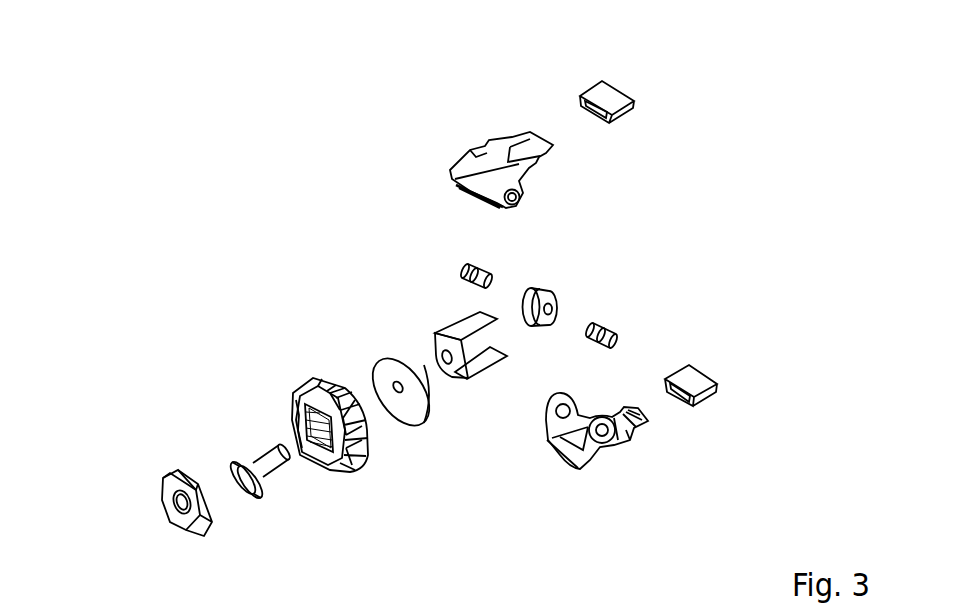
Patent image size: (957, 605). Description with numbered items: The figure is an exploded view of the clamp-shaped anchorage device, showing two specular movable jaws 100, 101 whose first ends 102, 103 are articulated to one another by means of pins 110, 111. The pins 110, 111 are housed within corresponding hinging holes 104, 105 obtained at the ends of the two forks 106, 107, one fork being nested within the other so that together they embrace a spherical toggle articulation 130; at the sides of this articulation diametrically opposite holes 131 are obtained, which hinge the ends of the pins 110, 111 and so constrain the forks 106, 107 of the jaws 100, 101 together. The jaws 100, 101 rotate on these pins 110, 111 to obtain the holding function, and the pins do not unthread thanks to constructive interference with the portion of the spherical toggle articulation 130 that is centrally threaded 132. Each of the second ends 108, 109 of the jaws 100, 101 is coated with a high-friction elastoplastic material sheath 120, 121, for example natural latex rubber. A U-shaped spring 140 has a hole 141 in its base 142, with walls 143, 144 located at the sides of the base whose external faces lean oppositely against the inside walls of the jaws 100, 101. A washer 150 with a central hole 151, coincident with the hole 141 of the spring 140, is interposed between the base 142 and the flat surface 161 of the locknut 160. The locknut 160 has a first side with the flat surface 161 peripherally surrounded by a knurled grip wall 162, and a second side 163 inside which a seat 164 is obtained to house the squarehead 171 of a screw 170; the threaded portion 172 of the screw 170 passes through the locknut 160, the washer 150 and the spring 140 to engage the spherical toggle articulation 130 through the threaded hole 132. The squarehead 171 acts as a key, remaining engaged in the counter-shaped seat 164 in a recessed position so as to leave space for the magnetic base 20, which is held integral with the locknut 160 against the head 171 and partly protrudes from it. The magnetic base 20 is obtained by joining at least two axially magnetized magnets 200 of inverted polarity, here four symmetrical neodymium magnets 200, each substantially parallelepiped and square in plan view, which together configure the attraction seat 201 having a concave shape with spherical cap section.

The magnetic base 20 is at (175, 523).
The movable jaw 100 is at (450, 164).
The movable jaw 101 is at (627, 456).
The first end 102 is at (452, 181).
The first end 103 is at (565, 460).
The hinging hole 104 is at (628, 431).
The hinging hole 105 is at (522, 195).
The fork 106 is at (602, 441).
The fork 107 is at (514, 212).
The second end 108 is at (529, 132).
The second end 109 is at (641, 422).
The pin 110 is at (462, 268).
The pin 111 is at (621, 328).
The elastoplastic material sheath 120 is at (720, 383).
The elastoplastic material sheath 121 is at (595, 82).
The spherical toggle articulation 130 is at (544, 283).
The hole 131 is at (556, 307).
The threaded hole 132 is at (539, 330).
The spring 140 is at (450, 314).
The hole 141 is at (440, 350).
The base 142 is at (458, 378).
The wall 143 is at (492, 358).
The wall 144 is at (452, 317).
The washer 150 is at (426, 422).
The central hole 151 is at (393, 382).
The locknut 160 is at (340, 474).
The flat surface 161 is at (320, 382).
The knurled grip wall 162 is at (302, 400).
The second side 163 is at (297, 397).
The seat 164 is at (313, 455).
The screw 170 is at (222, 460).
The squarehead 171 is at (243, 494).
The threaded portion 172 is at (268, 452).
The magnet 200 is at (163, 475).
The attraction seat 201 is at (175, 506).